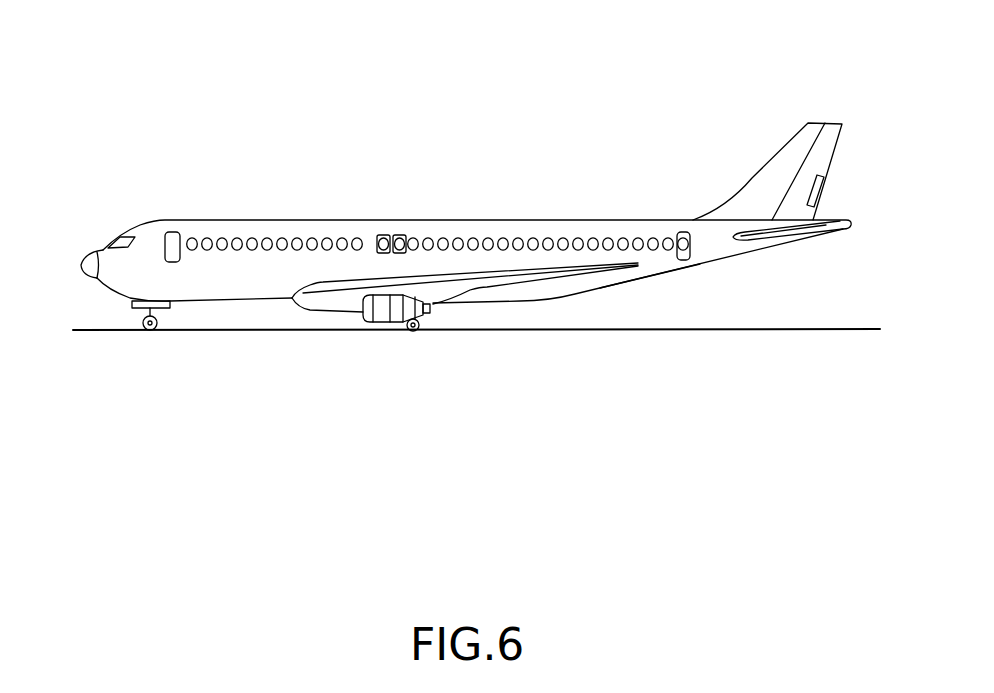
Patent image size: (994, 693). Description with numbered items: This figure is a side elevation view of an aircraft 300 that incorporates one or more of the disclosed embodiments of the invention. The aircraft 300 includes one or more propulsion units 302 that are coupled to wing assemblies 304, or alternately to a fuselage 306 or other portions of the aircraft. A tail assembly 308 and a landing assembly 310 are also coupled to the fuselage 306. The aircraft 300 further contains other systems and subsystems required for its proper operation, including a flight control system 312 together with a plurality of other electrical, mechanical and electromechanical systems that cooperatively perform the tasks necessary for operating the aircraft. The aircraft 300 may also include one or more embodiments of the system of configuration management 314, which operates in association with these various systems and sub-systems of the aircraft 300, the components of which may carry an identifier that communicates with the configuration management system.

The aircraft 300 is at (638, 63).
The propulsion unit 302 is at (362, 322).
The wing assembly 304 is at (483, 283).
The fuselage 306 is at (437, 220).
The tail assembly 308 is at (858, 192).
The landing assembly 310 is at (143, 322).
The flight control system 312 is at (107, 251).
The system of configuration management 314 is at (648, 268).